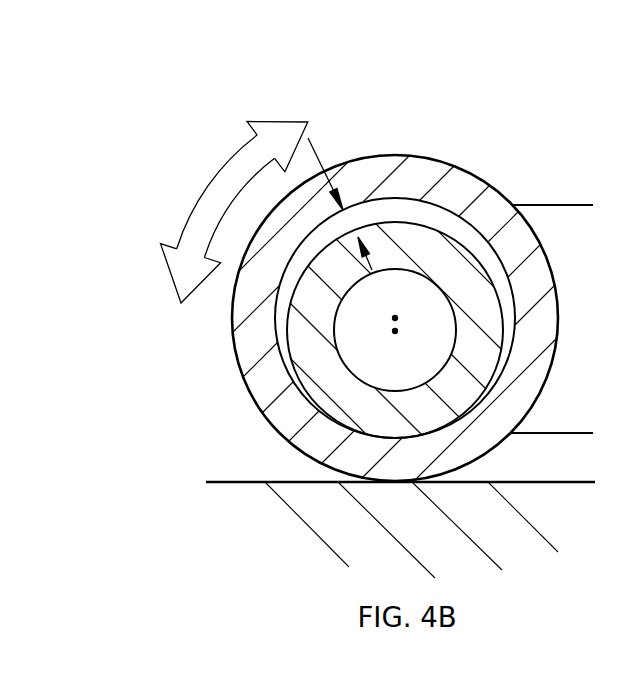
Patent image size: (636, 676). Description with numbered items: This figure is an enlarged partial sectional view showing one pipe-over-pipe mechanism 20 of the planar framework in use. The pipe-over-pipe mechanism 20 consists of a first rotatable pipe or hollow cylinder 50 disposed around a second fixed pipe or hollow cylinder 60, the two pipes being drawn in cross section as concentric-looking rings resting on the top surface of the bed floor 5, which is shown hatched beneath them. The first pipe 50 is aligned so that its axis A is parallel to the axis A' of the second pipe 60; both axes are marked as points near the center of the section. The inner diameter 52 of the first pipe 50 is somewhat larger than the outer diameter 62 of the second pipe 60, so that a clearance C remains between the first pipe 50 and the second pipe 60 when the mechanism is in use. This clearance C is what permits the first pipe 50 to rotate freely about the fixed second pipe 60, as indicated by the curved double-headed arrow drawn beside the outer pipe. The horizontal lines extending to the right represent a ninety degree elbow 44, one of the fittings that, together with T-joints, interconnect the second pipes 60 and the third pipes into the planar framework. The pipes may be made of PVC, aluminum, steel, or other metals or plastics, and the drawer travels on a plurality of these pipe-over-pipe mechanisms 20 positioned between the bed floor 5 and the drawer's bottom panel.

The pipe-over-pipe mechanism 20 is at (325, 92).
The first pipe 50 is at (425, 177).
The 90 degree elbow 44 is at (553, 232).
The second pipe 60 is at (338, 375).
The outer diameter 62 is at (500, 372).
The inner diameter 52 is at (293, 252).
The clearance C is at (308, 138).
The axis A is at (494, 296).
The axis A' is at (509, 324).
The bed floor 5 is at (352, 520).